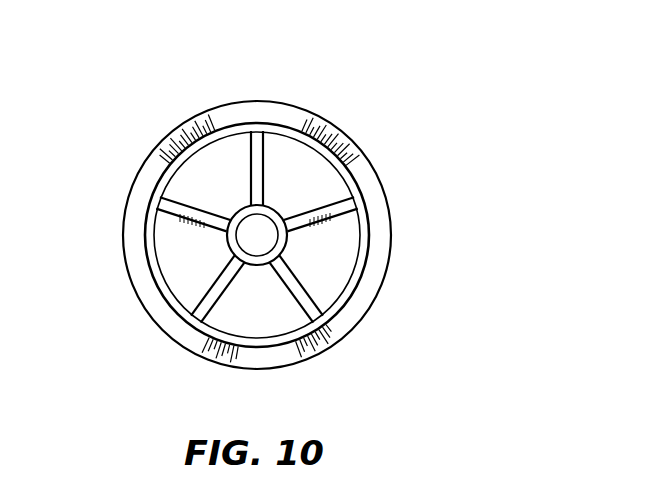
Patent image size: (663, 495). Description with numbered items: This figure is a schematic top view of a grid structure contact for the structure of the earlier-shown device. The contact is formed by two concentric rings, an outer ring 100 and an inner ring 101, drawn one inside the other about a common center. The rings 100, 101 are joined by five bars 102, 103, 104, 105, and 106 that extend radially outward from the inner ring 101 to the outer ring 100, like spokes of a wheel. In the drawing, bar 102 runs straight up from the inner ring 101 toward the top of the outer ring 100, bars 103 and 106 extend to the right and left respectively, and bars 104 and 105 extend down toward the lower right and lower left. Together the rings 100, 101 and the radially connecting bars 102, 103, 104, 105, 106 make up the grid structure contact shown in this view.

The concentric ring 100 is at (360, 152).
The concentric ring 101 is at (270, 207).
The bar 102 is at (270, 137).
The bar 103 is at (310, 230).
The bar 104 is at (327, 292).
The bar 105 is at (208, 307).
The bar 106 is at (170, 193).